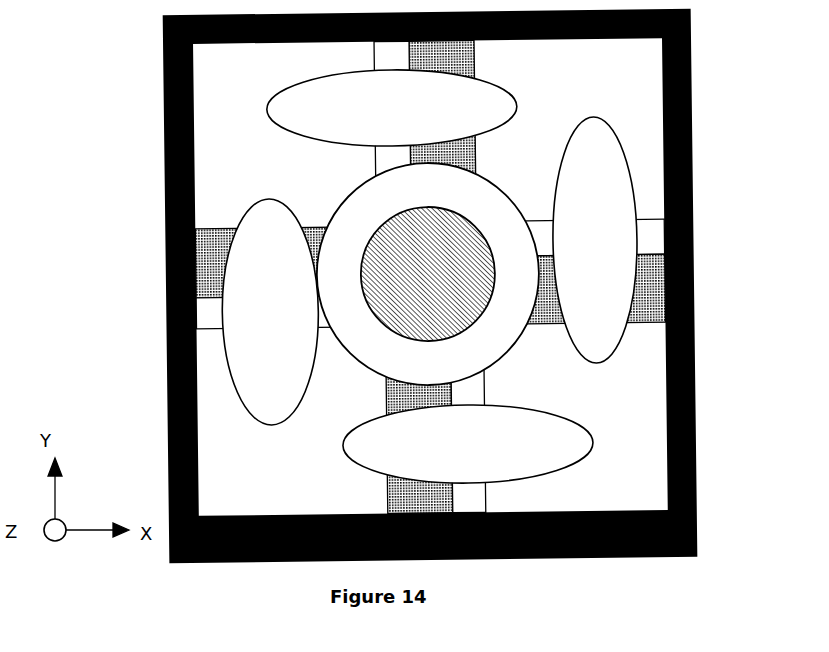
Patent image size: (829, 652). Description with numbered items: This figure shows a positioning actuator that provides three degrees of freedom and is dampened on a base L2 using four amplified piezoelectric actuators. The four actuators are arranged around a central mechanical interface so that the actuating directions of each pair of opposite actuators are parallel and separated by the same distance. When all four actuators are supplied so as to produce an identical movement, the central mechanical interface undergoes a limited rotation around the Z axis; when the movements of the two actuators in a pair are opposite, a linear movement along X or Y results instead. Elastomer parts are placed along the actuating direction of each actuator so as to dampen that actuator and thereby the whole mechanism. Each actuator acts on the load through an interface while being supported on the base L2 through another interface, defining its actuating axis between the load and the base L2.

The base L2 is at (700, 467).